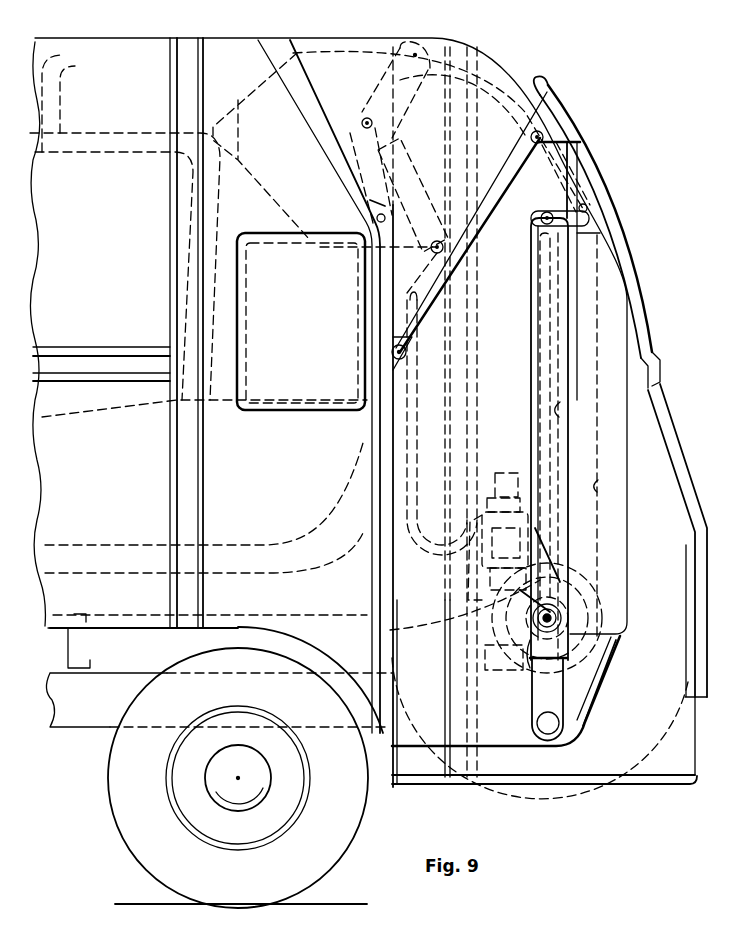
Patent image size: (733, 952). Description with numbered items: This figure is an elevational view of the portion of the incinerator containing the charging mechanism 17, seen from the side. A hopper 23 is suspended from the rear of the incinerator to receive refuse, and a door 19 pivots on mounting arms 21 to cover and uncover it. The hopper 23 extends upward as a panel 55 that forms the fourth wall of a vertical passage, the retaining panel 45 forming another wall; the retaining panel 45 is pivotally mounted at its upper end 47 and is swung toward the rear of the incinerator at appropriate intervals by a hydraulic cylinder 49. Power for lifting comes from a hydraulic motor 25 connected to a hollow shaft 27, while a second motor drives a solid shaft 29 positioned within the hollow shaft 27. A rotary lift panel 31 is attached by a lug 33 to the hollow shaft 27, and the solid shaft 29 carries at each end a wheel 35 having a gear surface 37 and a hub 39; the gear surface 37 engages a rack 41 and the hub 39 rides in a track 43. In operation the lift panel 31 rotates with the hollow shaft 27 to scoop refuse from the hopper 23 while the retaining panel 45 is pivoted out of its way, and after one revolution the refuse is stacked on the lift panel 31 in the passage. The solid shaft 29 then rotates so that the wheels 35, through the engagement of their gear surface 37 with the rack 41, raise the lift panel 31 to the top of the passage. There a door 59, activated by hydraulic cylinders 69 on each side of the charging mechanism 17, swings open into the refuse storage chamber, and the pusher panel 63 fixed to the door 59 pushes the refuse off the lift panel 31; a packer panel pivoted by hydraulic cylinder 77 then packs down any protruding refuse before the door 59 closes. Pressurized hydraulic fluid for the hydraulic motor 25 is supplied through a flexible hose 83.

The charging mechanism 17 is at (501, 47).
The door 19 is at (627, 230).
The mounting arms 21 is at (484, 227).
The hopper 23 is at (641, 745).
The hydraulic motor 25 is at (526, 528).
The hollow shaft 27 is at (578, 622).
The solid shaft 29 is at (592, 648).
The rotary lift panel 31 is at (425, 600).
The lug 33 is at (547, 606).
The wheel 35 is at (586, 602).
The gear surface 37 is at (588, 583).
The hub 39 is at (522, 654).
The rack 41 is at (594, 488).
The track 43 is at (560, 405).
The retaining panel 45 is at (531, 350).
The upper end 47 is at (543, 218).
The hydraulic cylinder 49 is at (583, 150).
The panel 55 is at (395, 575).
The door 59 is at (352, 212).
The pusher panel 63 is at (518, 148).
The hydraulic cylinders 69 is at (400, 150).
The hydraulic cylinder 77 is at (364, 121).
The hose 83 is at (413, 480).